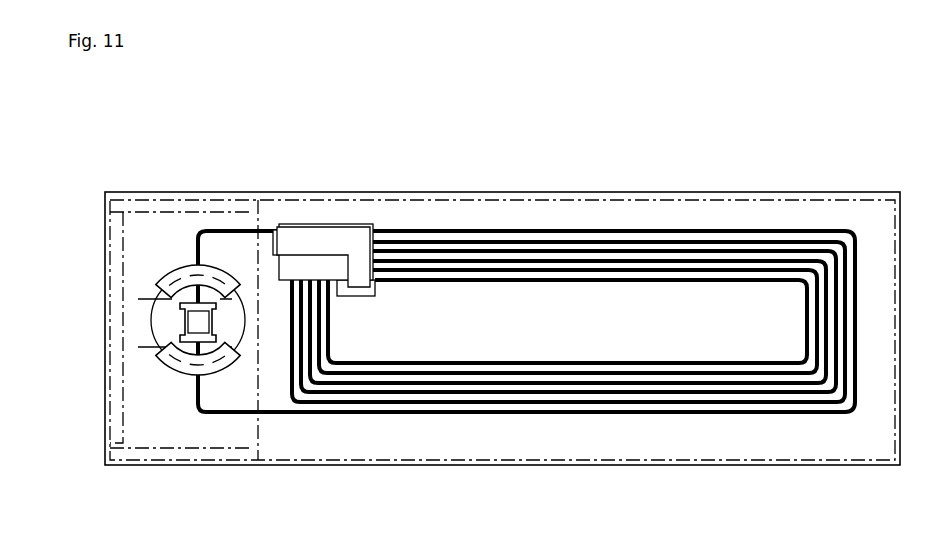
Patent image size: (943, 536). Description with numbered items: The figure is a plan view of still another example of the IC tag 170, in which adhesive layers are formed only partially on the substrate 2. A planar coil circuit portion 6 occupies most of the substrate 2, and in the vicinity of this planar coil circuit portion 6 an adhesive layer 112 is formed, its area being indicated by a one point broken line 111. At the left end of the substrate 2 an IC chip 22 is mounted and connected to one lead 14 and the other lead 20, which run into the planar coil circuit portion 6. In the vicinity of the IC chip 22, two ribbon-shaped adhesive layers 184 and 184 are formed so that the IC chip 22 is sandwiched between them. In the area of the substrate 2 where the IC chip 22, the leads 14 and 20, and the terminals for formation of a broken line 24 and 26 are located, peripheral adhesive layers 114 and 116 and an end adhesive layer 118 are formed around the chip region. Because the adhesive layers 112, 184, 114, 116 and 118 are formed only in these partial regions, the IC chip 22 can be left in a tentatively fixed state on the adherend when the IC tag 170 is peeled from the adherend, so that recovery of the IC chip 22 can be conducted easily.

The IC tag 170 is at (479, 309).
The planar coil circuit portion 6 is at (526, 285).
The one lead 14 is at (228, 230).
The substrate 2 is at (179, 337).
The other lead 20 is at (217, 415).
The IC chip 22 is at (193, 323).
The terminal for formation of broken line 24 is at (173, 268).
The terminal for formation of broken line 26 is at (175, 370).
The ribbon-shaped adhesive layer 184 is at (145, 298).
The peripheral adhesive layer 114 is at (182, 203).
The peripheral adhesive layer 116 is at (227, 455).
The end adhesive layer 118 is at (113, 272).
The one point broken line 111 is at (556, 462).
The adhesive layer 112 is at (445, 445).